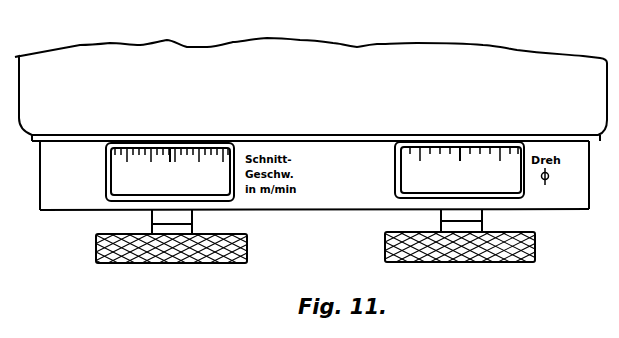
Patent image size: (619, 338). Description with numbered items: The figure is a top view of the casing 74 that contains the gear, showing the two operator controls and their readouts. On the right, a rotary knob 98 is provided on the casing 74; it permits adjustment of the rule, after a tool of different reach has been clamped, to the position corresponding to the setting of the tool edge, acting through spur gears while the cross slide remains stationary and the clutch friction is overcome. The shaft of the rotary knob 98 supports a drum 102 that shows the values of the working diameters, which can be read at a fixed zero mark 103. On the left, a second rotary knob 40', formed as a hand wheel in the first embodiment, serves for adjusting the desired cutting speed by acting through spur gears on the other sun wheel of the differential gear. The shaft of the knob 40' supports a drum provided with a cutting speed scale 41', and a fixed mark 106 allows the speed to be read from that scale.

The casing 74 is at (407, 67).
The fixed mark 106 is at (169, 147).
The cutting speed scale 41' is at (177, 149).
The fixed zero mark 103 is at (459, 146).
The drum 102 is at (505, 147).
The second rotary knob 40' is at (195, 248).
The rotary knob 98 is at (530, 240).